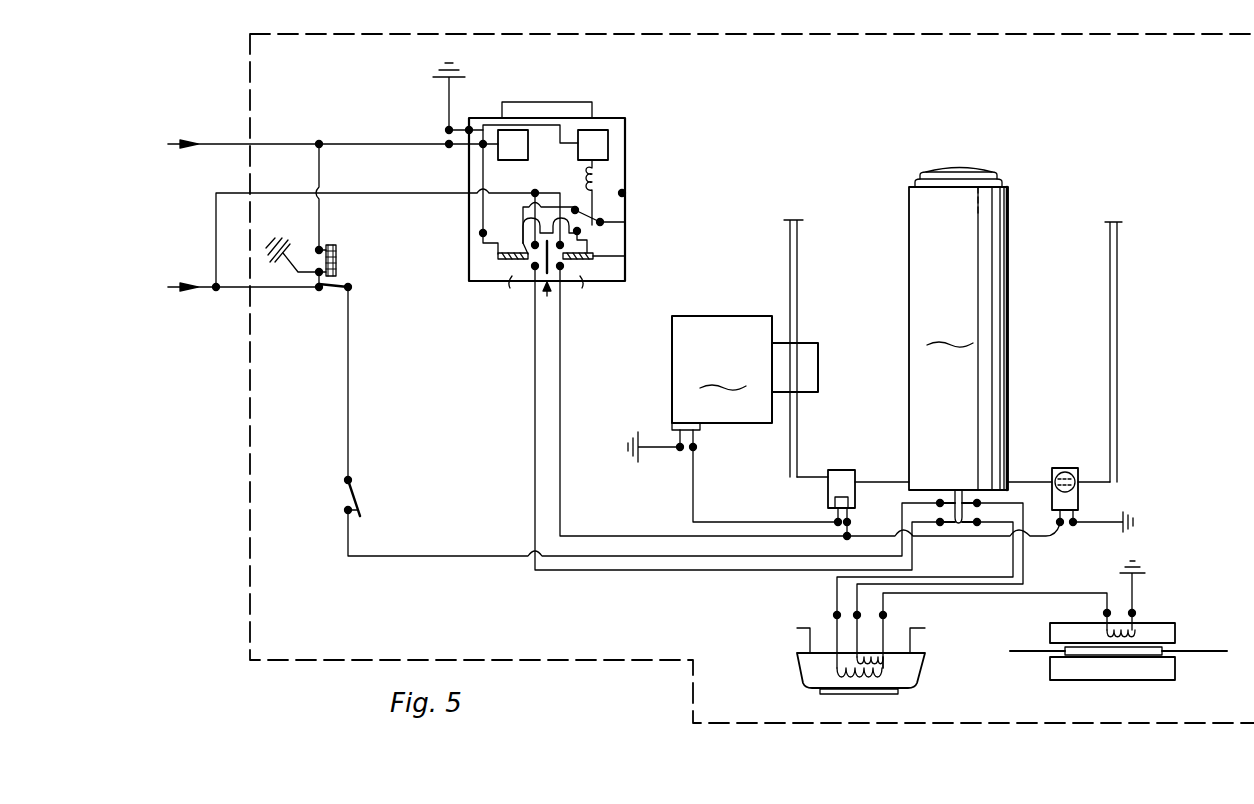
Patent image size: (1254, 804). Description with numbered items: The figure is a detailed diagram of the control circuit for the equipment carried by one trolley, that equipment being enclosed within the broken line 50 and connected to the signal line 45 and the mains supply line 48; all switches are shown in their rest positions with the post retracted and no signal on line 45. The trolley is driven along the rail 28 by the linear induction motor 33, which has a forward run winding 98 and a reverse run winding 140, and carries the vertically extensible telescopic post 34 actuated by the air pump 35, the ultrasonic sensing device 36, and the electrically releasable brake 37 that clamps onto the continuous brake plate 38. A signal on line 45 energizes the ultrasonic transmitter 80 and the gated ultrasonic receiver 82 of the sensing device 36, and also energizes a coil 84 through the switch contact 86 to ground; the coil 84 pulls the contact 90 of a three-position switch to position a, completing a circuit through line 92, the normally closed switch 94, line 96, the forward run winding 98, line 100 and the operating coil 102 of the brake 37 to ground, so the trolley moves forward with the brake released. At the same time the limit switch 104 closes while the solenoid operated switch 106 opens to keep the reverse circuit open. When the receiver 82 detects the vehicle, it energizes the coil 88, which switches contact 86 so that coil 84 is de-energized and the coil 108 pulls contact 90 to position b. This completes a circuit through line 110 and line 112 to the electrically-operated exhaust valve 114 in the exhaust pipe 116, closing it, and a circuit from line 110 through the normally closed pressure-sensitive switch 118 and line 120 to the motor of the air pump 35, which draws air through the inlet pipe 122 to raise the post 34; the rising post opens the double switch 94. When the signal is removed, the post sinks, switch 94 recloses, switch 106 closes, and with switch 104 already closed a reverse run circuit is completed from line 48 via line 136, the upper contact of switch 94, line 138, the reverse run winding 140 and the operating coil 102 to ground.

The rail 28 is at (885, 695).
The linear induction motor 33 is at (906, 668).
The vertically extensible telescopic post 34 is at (958, 346).
The air pump 35 is at (723, 389).
The ultrasonic sensing device 36 is at (558, 189).
The electrically releasable brake 37 is at (1192, 641).
The continuous brake plate 38 is at (1211, 656).
The line 45 is at (221, 141).
The mains supply line 48 is at (204, 290).
The broken line 50 is at (250, 472).
The ultrasonic transmitter 80 is at (515, 138).
The ultrasonic receiver 82 is at (594, 142).
The coil 84 is at (498, 256).
The switch contact 86 is at (578, 209).
The coil 88 is at (596, 186).
The contact of three-position switch 90 is at (547, 296).
The line 92 is at (534, 404).
The normally closed switch 94 is at (926, 510).
The line 96 is at (837, 590).
The forward run winding 98 is at (862, 676).
The line 100 is at (1003, 594).
The operating coil 102 is at (1137, 632).
The limit switch 104 is at (362, 503).
The solenoid operated switch 106 is at (326, 291).
The coil 108 is at (625, 256).
The line 110 is at (562, 470).
The line 112 is at (1050, 540).
The electrically-operated exhaust valve 114 is at (1070, 500).
The exhaust pipe 116 is at (1118, 452).
The normally closed pressure-sensitive switch 118 is at (828, 496).
The line 120 is at (728, 522).
The inlet pipe 122 is at (798, 296).
The line 136 is at (447, 558).
The line 138 is at (1024, 578).
The reverse run winding 140 is at (870, 658).